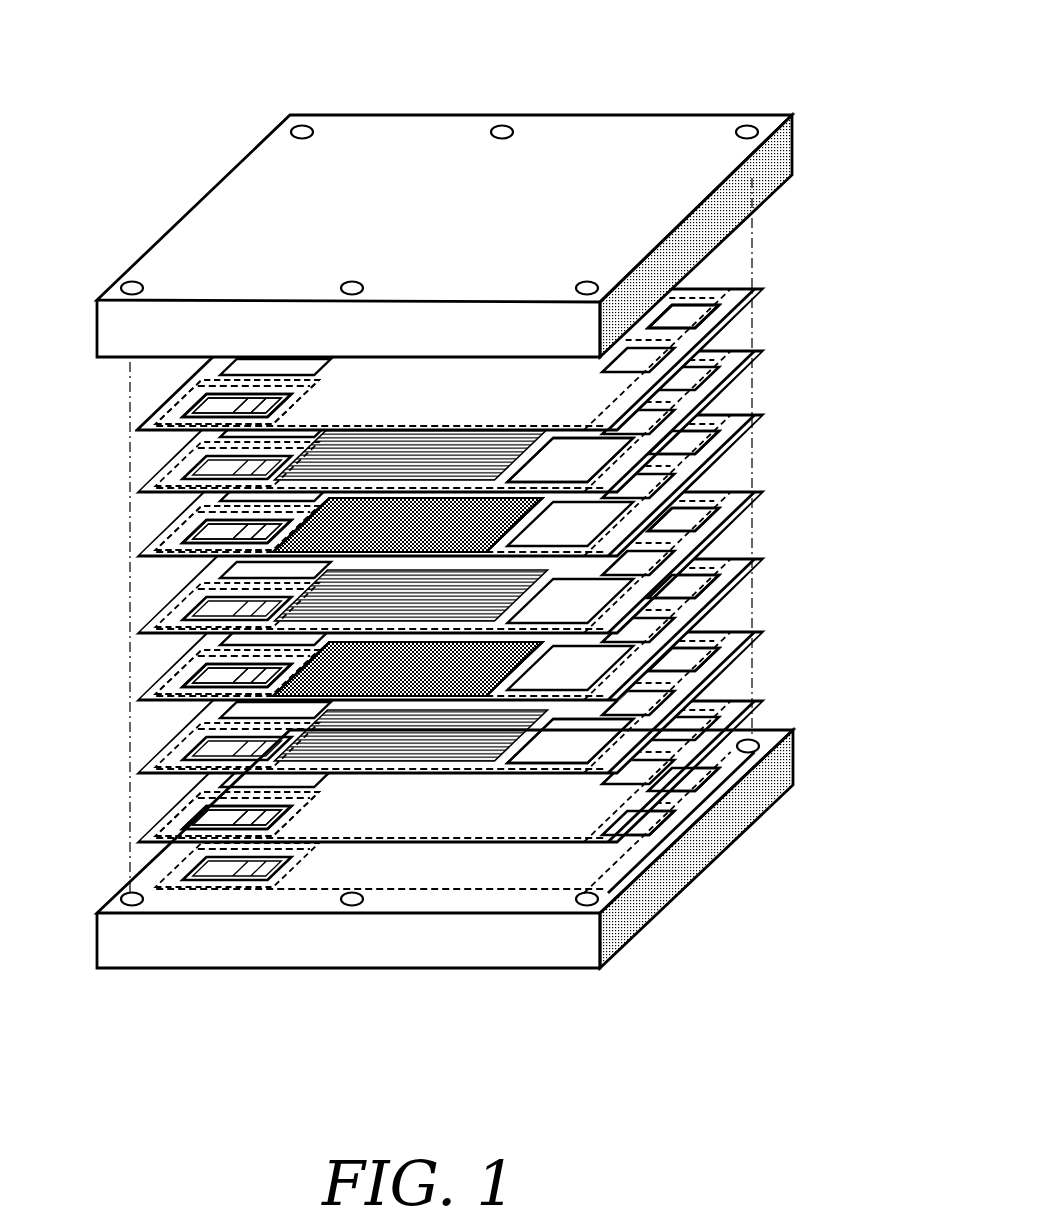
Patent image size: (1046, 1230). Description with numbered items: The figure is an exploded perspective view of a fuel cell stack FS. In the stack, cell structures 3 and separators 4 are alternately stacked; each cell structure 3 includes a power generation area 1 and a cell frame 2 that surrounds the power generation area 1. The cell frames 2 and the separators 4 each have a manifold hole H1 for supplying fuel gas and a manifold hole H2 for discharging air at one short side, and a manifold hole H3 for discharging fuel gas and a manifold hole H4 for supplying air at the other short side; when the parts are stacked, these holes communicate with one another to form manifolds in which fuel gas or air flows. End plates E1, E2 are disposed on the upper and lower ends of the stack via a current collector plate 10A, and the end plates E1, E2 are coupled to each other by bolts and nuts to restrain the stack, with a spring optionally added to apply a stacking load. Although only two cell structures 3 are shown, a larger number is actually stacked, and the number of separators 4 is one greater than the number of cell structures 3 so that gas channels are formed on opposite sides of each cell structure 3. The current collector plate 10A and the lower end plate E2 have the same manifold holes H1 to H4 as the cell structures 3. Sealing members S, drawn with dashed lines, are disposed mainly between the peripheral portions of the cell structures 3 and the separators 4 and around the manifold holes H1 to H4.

The fuel cell stack FS is at (700, 90).
The end plate E1 is at (243, 190).
The end plate E2 is at (268, 950).
The power generation area 1 is at (385, 513).
The cell frame 2 is at (520, 523).
The sealing member S is at (333, 545).
The cell structure 3 is at (758, 421).
The separator 4 is at (765, 348).
The current collector plate 10A is at (512, 380).
The manifold hole H1 is at (165, 412).
The manifold hole H2 is at (205, 358).
The manifold hole H3 is at (712, 277).
The manifold hole H4 is at (750, 282).